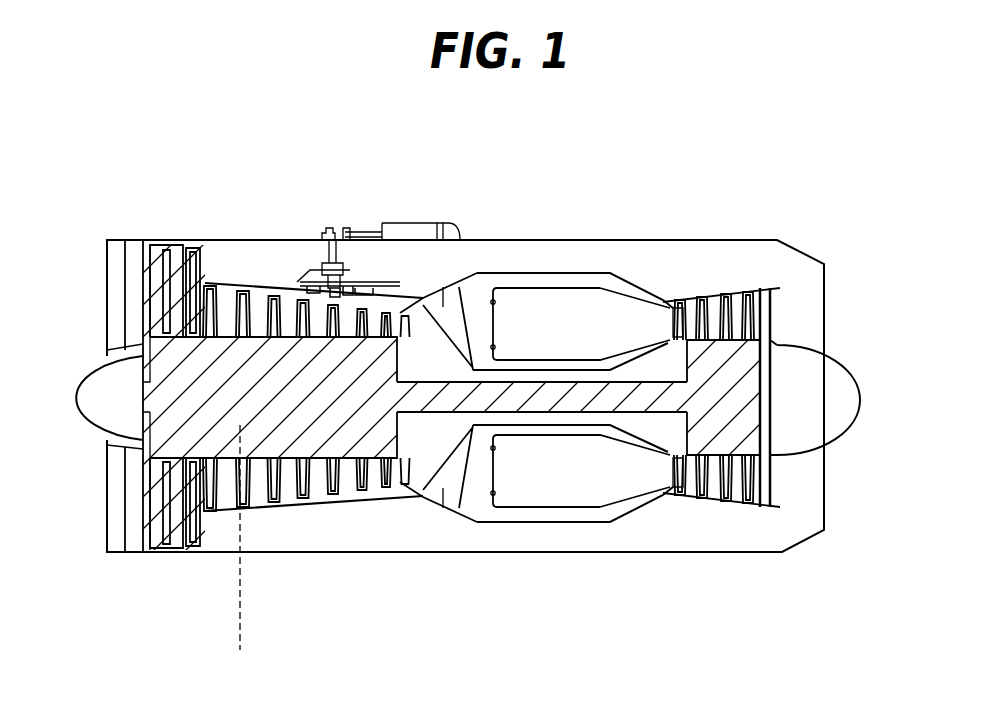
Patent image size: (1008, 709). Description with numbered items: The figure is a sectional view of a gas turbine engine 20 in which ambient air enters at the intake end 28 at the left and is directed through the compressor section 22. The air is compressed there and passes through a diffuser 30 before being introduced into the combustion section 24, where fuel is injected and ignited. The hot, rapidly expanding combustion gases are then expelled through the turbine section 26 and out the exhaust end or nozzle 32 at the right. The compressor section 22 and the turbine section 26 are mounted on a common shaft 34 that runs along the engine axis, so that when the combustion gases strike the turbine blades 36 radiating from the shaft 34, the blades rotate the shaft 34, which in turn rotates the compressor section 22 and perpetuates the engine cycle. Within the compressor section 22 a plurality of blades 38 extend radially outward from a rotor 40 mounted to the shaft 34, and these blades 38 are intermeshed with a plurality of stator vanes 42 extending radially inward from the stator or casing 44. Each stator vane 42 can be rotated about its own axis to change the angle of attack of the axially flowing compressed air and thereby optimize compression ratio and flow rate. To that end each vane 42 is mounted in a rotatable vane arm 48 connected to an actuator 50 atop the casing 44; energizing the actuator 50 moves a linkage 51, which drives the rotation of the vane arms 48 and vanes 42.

The gas turbine engine 20 is at (772, 176).
The compressor section 22 is at (306, 426).
The combustion section 24 is at (571, 401).
The turbine section 26 is at (777, 464).
The intake end 28 is at (126, 446).
The diffuser 30 is at (460, 520).
The exhaust end or nozzle 32 is at (802, 498).
The common shaft 34 is at (493, 395).
The turbine blades 36 is at (750, 323).
The blades 38 is at (233, 287).
The rotor 40 is at (126, 397).
The stator vanes 42 is at (273, 295).
The stator or casing 44 is at (522, 253).
The vane arm 48 is at (407, 250).
The actuator 50 is at (402, 222).
The linkage 51 is at (356, 270).